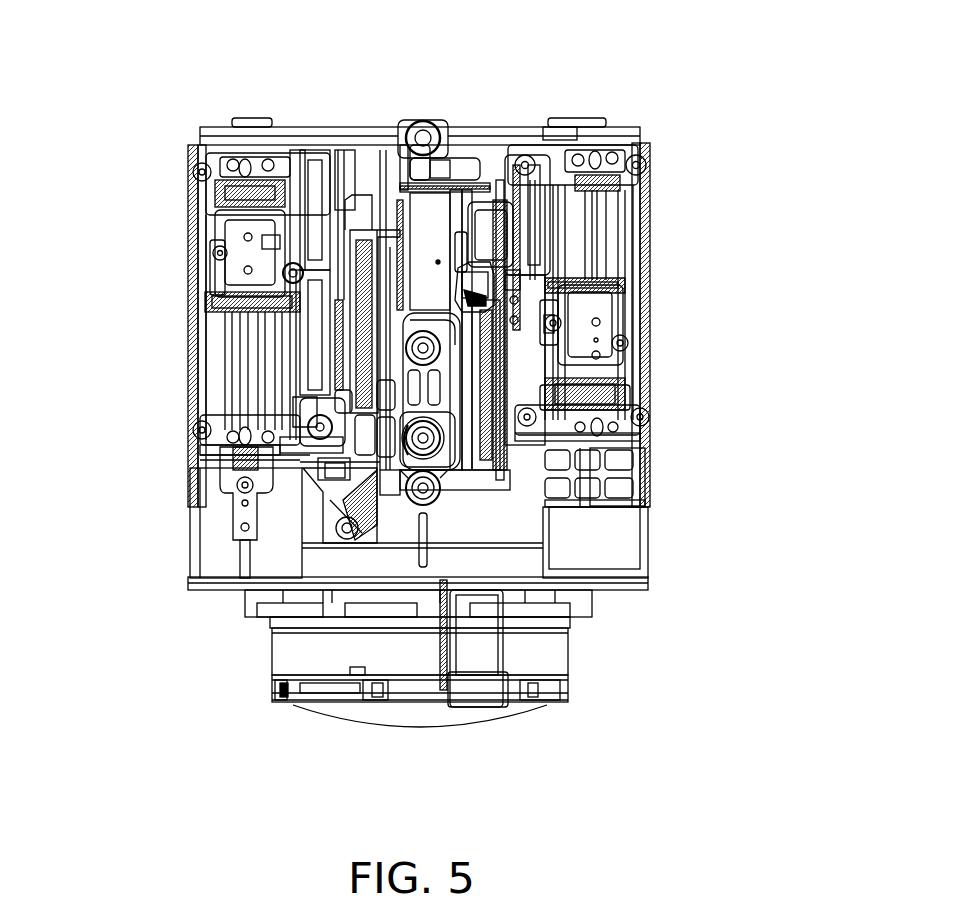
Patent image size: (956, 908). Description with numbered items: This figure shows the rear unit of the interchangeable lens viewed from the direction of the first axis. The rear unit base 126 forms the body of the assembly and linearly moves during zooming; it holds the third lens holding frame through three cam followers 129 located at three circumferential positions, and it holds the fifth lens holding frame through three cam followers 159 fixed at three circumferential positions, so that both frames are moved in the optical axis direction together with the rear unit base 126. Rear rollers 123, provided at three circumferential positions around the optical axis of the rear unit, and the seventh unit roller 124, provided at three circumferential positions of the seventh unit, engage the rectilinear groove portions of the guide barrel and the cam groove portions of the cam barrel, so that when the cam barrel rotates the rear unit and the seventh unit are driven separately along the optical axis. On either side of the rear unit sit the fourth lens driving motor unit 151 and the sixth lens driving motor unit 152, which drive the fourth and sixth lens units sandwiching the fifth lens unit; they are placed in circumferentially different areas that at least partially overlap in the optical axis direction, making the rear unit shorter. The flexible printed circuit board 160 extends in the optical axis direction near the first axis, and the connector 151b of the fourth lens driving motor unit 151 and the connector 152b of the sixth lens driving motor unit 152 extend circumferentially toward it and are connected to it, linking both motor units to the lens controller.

The cam follower 129 is at (428, 126).
The rear unit base 126 is at (515, 132).
The sixth lens driving motor unit 152 is at (243, 255).
The connector 152b is at (350, 314).
The flexible printed circuit board 160 is at (470, 395).
The connector 151b is at (485, 277).
The fourth lens driving motor unit 151 is at (598, 335).
The rear roller 123 is at (440, 350).
The cam follower 159 is at (433, 443).
The seventh unit roller 124 is at (448, 490).